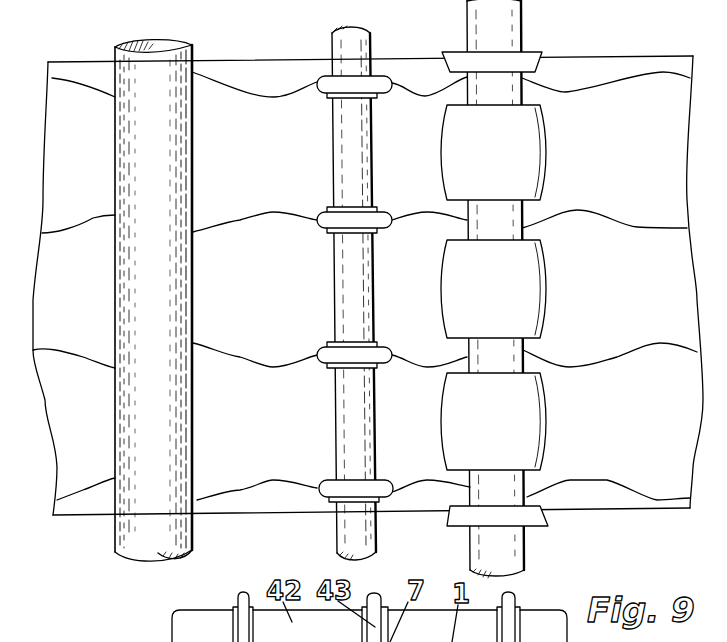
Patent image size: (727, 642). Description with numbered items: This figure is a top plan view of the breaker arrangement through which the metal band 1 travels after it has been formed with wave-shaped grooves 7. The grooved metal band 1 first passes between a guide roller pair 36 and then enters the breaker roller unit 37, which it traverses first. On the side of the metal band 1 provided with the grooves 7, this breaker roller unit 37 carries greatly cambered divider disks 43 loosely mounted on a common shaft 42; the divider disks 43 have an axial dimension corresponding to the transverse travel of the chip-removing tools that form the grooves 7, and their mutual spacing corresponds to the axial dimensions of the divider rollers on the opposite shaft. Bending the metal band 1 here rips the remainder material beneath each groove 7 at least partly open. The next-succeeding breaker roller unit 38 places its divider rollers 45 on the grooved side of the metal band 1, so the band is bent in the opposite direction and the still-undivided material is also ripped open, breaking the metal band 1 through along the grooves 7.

The metal band 1 is at (78, 105).
The wave-shaped grooves 7 is at (621, 82).
The guide roller pair 36 is at (158, 62).
The breaker roller unit 37 is at (370, 491).
The breaker roller unit 38 is at (530, 453).
The common shaft 42 is at (367, 448).
The divider disks 43 is at (333, 83).
The divider rollers 45 is at (532, 135).